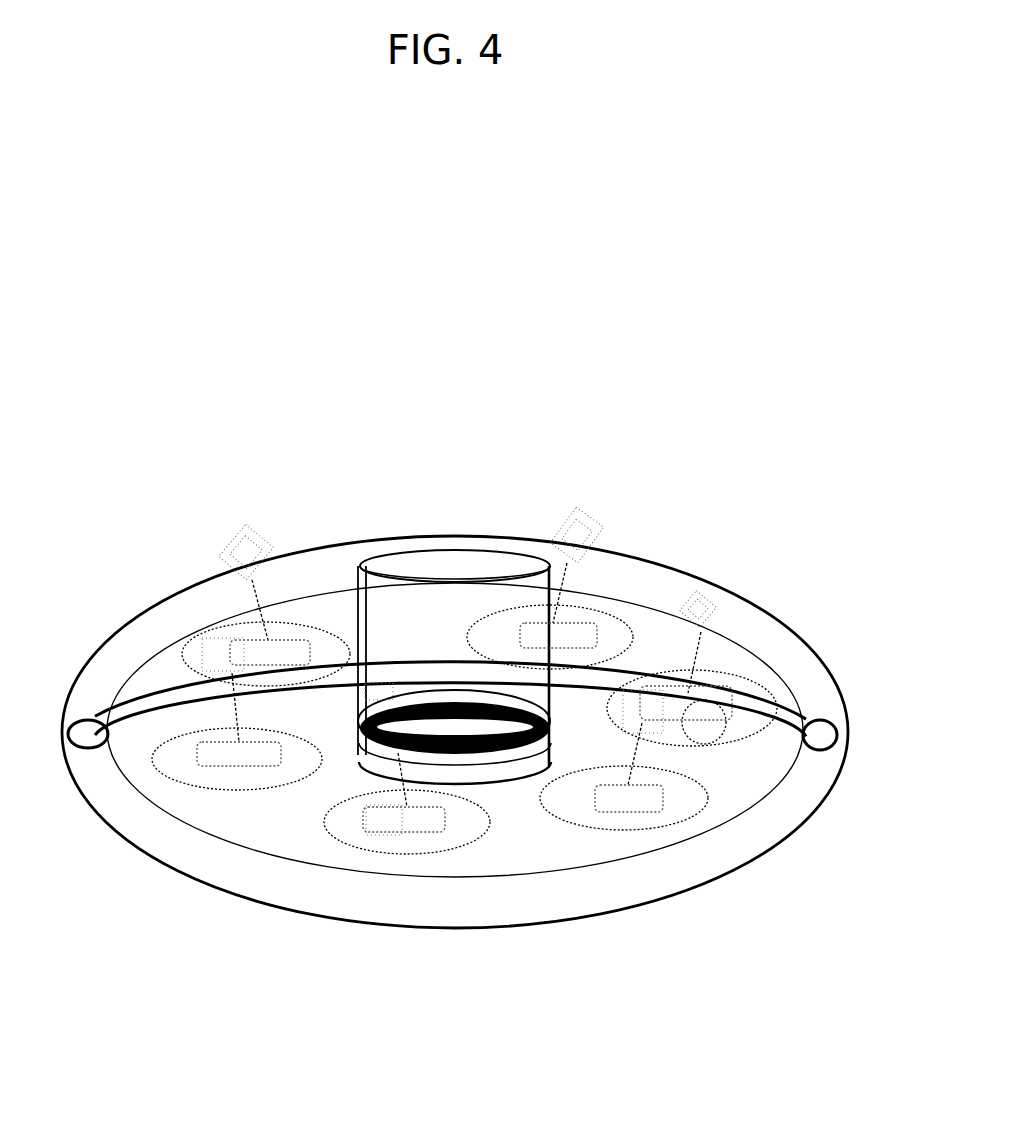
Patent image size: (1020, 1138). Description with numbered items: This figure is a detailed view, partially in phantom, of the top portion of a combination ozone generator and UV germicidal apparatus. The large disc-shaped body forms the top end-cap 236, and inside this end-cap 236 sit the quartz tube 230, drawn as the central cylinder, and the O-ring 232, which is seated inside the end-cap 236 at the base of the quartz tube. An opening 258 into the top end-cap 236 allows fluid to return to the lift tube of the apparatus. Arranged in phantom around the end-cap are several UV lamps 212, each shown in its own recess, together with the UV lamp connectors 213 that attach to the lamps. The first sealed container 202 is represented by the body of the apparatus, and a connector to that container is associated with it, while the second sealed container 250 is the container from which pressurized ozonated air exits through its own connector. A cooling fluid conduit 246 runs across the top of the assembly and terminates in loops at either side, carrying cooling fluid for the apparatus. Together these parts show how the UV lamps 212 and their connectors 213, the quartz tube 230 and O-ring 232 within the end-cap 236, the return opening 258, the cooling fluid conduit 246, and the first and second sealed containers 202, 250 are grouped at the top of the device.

The first sealed container 202 is at (471, 862).
The UV lamps 212 is at (156, 766).
The UV lamp connectors 213 is at (252, 552).
The quartz tube 230 is at (378, 757).
The O-ring 232 is at (475, 754).
The end-cap 236 is at (490, 552).
The cooling fluid conduit 246 is at (806, 722).
The second sealed container 250 is at (548, 905).
The opening 258 is at (358, 560).